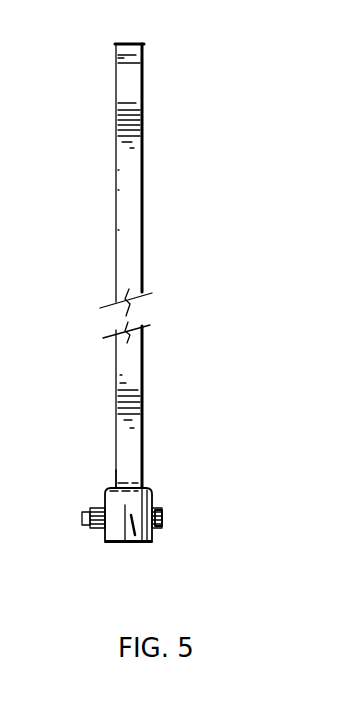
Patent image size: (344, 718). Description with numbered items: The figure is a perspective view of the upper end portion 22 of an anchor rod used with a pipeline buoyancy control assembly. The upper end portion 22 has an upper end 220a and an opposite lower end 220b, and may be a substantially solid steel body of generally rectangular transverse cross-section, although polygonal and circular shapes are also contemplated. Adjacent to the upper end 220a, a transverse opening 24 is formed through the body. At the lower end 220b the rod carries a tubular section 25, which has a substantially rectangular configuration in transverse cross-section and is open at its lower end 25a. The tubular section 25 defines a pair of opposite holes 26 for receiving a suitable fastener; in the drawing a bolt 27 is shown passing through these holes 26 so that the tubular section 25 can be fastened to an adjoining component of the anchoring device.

The upper end portion 22 is at (193, 238).
The transverse opening 24 is at (140, 62).
The tubular section 25 is at (138, 543).
The lower end 25a is at (112, 545).
The holes 26 is at (105, 505).
The bolt 27 is at (165, 515).
The upper end 220a is at (128, 43).
The lower end 220b is at (148, 481).